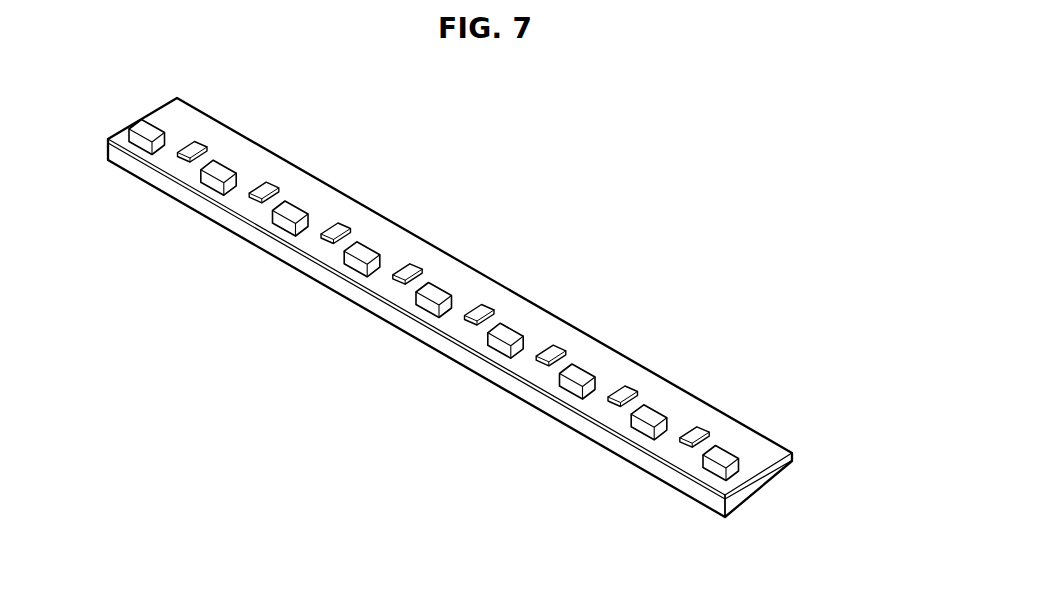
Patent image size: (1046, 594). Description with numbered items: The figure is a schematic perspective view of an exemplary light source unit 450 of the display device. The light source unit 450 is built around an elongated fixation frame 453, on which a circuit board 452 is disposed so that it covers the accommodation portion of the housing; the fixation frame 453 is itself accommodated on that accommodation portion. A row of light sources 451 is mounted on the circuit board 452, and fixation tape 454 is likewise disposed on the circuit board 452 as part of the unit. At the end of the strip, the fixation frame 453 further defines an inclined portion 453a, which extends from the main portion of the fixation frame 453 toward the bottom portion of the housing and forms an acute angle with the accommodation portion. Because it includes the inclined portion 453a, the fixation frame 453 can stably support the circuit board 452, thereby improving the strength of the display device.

The light source unit 450 is at (731, 306).
The light source 451 is at (648, 413).
The circuit board 452 is at (615, 369).
The fixation frame 453 is at (757, 492).
The inclined portion 453a is at (788, 478).
The fixation tape 454 is at (688, 433).